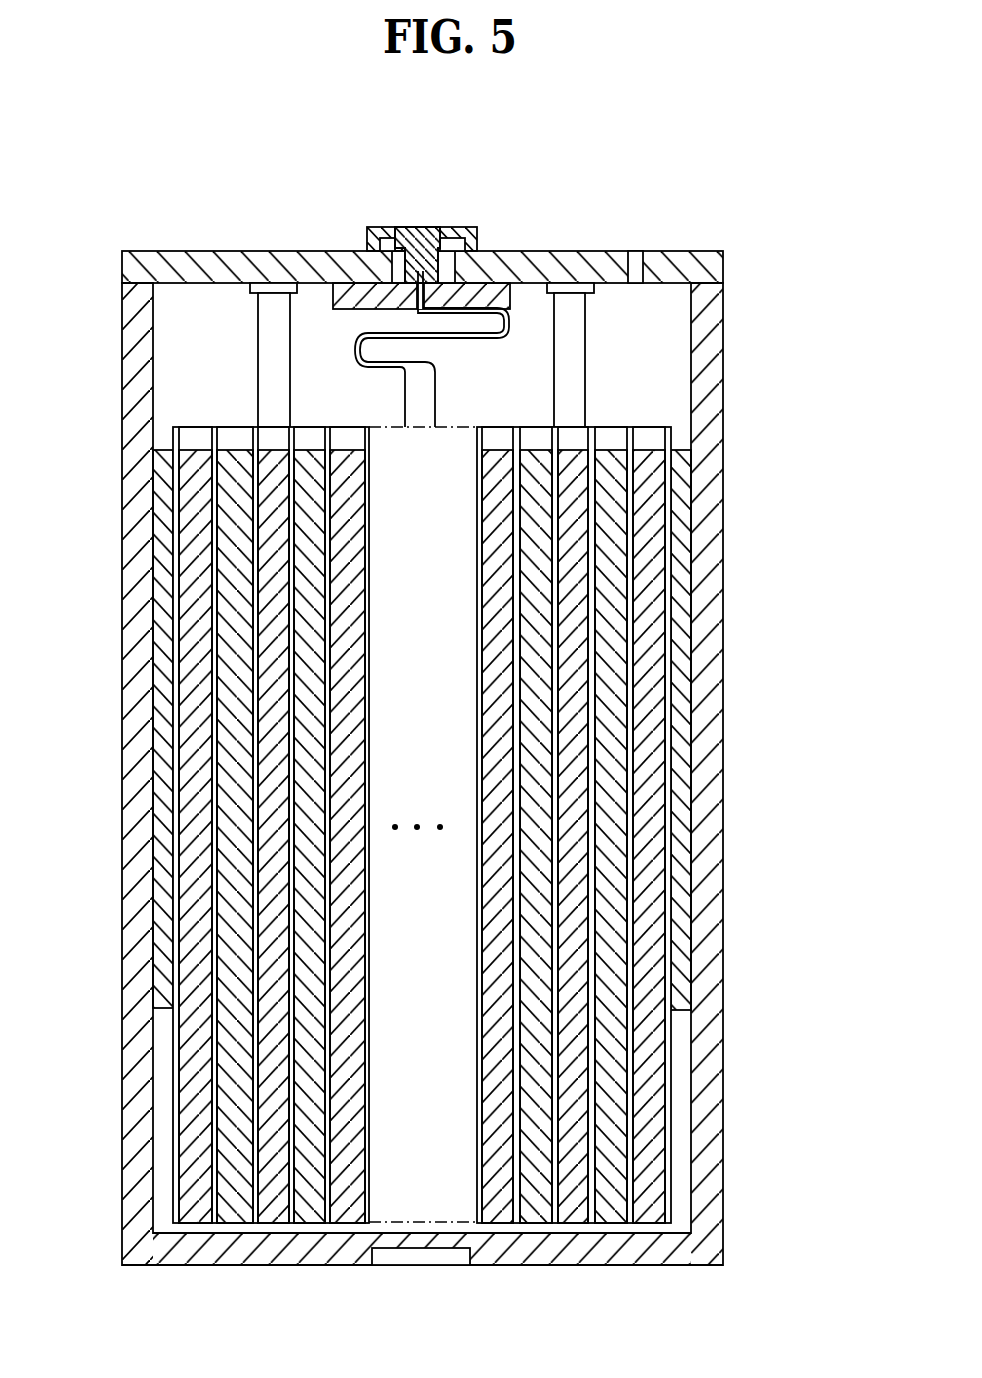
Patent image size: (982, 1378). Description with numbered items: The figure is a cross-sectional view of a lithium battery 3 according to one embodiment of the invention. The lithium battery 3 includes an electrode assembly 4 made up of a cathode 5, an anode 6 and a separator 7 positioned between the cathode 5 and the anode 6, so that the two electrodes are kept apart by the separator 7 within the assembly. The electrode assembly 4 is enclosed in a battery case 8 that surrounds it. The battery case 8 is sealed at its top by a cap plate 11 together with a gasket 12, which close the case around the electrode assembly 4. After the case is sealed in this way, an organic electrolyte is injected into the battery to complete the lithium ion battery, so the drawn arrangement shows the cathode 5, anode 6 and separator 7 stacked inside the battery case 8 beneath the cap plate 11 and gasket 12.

The lithium battery 3 is at (450, 724).
The electrode assembly 4 is at (420, 787).
The cathode 5 is at (655, 1143).
The anode 6 is at (225, 1050).
The separator 7 is at (177, 1146).
The battery case 8 is at (123, 393).
The cap plate 11 is at (539, 251).
The gasket 12 is at (378, 230).